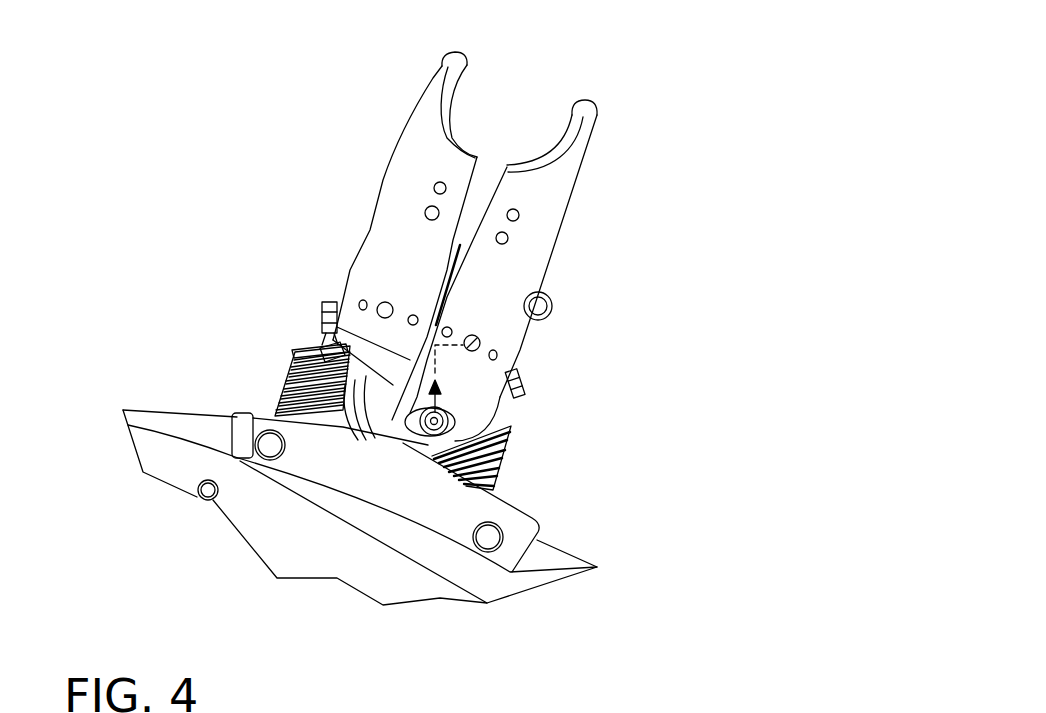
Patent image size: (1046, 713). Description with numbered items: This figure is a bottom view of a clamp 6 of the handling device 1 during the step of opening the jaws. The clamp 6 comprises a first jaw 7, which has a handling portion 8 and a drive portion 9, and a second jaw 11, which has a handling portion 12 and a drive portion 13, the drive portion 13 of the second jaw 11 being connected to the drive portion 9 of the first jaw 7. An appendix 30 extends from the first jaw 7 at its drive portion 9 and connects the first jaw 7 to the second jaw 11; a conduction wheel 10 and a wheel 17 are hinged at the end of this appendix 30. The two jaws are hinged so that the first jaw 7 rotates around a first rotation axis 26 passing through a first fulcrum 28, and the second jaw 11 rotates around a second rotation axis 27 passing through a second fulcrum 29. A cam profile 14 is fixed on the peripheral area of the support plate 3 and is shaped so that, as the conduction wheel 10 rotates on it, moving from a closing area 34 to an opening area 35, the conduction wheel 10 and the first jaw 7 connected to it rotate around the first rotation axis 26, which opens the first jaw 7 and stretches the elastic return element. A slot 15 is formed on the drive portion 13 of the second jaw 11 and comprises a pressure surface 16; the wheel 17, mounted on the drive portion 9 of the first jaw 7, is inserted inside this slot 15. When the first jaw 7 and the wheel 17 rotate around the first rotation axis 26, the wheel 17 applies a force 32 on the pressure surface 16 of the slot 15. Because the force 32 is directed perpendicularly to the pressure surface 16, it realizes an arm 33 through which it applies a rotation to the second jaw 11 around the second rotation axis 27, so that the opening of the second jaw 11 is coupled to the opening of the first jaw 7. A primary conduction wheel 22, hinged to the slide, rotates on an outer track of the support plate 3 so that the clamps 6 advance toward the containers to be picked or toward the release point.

The handling device 1 is at (268, 198).
The support plate 3 is at (158, 442).
The clamp 6 is at (520, 102).
The first jaw 7 is at (398, 220).
The handling portion 8 is at (410, 75).
The drive portion 9 is at (287, 382).
The conduction wheel 10 is at (505, 452).
The second jaw 11 is at (543, 228).
The handling portion 12 is at (608, 150).
The drive portion 13 is at (505, 423).
The cam profile 14 is at (505, 498).
The slot 15 is at (434, 428).
The pressure surface 16 is at (310, 353).
The wheel 17 is at (410, 420).
The primary conduction wheel 22 is at (365, 392).
The first rotation axis 26 is at (310, 277).
The first fulcrum 28 is at (378, 306).
The second rotation axis 27 is at (568, 344).
The second fulcrum 29 is at (482, 343).
The appendix 30 is at (320, 316).
The force 32 is at (450, 405).
The arm 33 is at (550, 306).
The closing area 34 is at (218, 506).
The opening area 35 is at (419, 470).